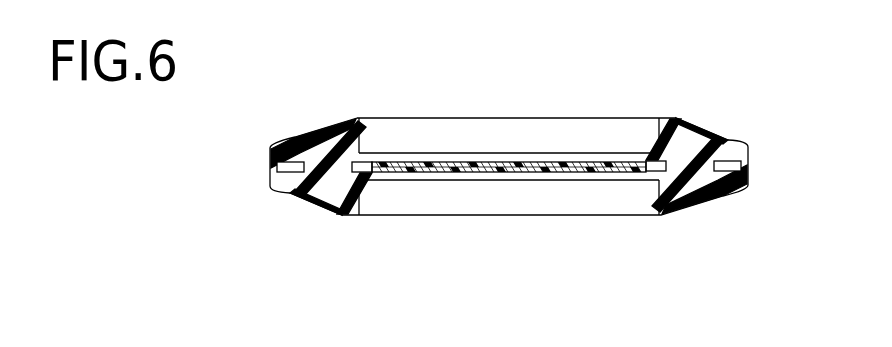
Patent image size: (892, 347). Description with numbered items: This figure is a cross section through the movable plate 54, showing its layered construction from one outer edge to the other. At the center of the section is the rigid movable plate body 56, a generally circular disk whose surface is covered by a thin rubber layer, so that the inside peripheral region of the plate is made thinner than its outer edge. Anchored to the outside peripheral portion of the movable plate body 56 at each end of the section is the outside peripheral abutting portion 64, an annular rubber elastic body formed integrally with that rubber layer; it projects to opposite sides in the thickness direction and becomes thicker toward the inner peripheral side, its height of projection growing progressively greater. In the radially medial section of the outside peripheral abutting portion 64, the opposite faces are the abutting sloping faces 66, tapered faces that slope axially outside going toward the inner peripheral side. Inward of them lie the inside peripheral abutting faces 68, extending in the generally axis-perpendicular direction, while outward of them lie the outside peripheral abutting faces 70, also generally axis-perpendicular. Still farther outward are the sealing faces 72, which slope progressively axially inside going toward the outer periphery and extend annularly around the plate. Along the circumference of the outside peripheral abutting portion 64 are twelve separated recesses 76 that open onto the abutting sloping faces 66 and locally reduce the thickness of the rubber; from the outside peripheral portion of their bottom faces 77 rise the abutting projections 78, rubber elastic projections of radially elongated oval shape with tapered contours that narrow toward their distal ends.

The movable plate 54 is at (702, 92).
The movable plate body 56 is at (475, 166).
The outside peripheral abutting portion 64 is at (306, 193).
The abutting sloping faces 66 is at (300, 137).
The inside peripheral abutting faces 68 is at (357, 133).
The outside peripheral abutting faces 70 is at (288, 139).
The sealing faces 72 is at (269, 141).
The separated recesses 76 is at (558, 162).
The bottom faces 77 is at (354, 193).
The abutting projections 78 is at (708, 130).